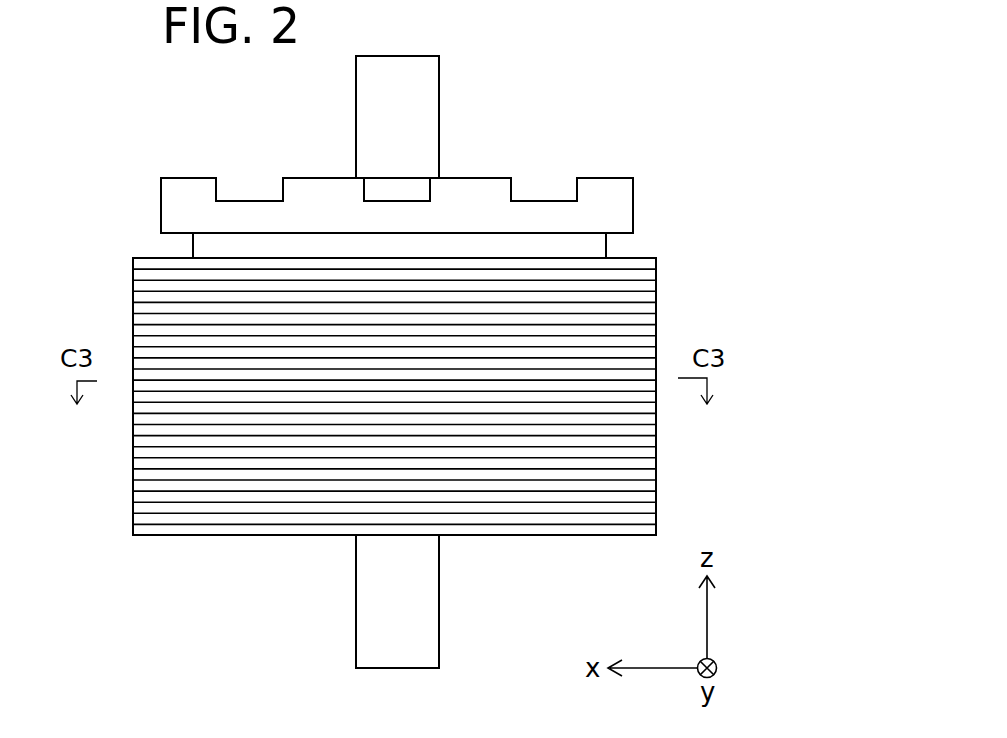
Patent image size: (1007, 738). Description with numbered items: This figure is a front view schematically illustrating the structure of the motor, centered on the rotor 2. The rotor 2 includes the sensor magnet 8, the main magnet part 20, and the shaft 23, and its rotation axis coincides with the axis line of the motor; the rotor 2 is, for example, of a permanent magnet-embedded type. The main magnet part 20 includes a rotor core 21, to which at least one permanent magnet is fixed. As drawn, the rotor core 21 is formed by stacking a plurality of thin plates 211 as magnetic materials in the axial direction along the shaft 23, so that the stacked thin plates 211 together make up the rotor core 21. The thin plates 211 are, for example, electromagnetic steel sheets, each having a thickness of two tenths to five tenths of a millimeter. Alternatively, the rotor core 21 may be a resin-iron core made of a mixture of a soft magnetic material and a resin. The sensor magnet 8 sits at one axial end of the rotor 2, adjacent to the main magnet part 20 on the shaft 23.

The rotor 2 is at (65, 140).
The sensor magnet 8 is at (614, 195).
The main magnet part 20 is at (133, 258).
The rotor core 21 is at (479, 395).
The thin plate 211 is at (640, 272).
The shaft 23 is at (410, 113).